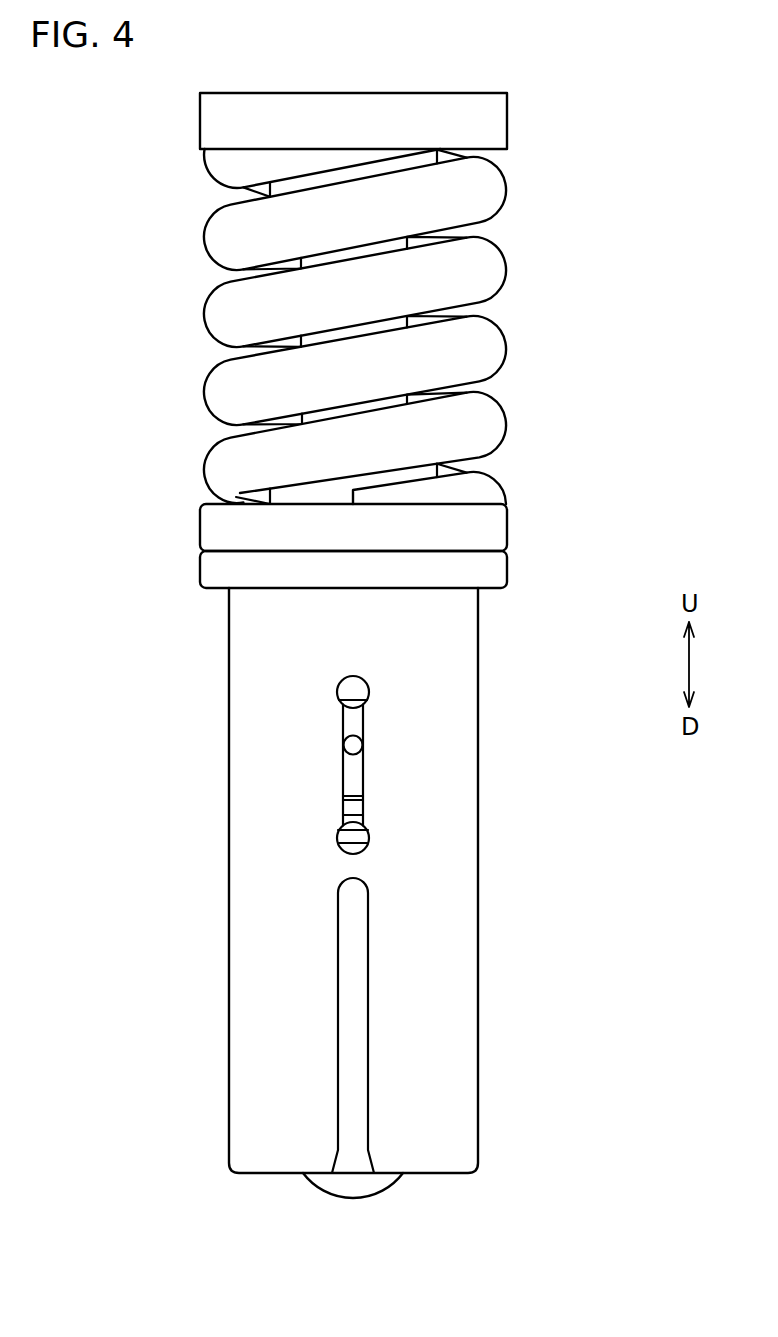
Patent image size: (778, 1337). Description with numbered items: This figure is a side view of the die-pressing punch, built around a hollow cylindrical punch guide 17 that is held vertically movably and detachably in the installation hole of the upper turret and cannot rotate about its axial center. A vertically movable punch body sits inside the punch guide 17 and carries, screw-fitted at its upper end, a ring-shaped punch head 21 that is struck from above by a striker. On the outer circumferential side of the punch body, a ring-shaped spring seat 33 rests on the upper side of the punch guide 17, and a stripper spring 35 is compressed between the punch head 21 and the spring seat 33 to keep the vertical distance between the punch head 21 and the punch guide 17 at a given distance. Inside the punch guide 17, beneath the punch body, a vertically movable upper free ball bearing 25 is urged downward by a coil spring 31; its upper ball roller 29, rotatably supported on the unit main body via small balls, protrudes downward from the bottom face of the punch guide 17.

The punch head 21 is at (498, 121).
The stripper spring 35 is at (497, 258).
The upper free ball bearing 25 is at (262, 266).
The spring seat 33 is at (503, 532).
The punch guide 17 is at (473, 773).
The coil spring 31 is at (358, 805).
The upper ball roller 29 is at (330, 1189).